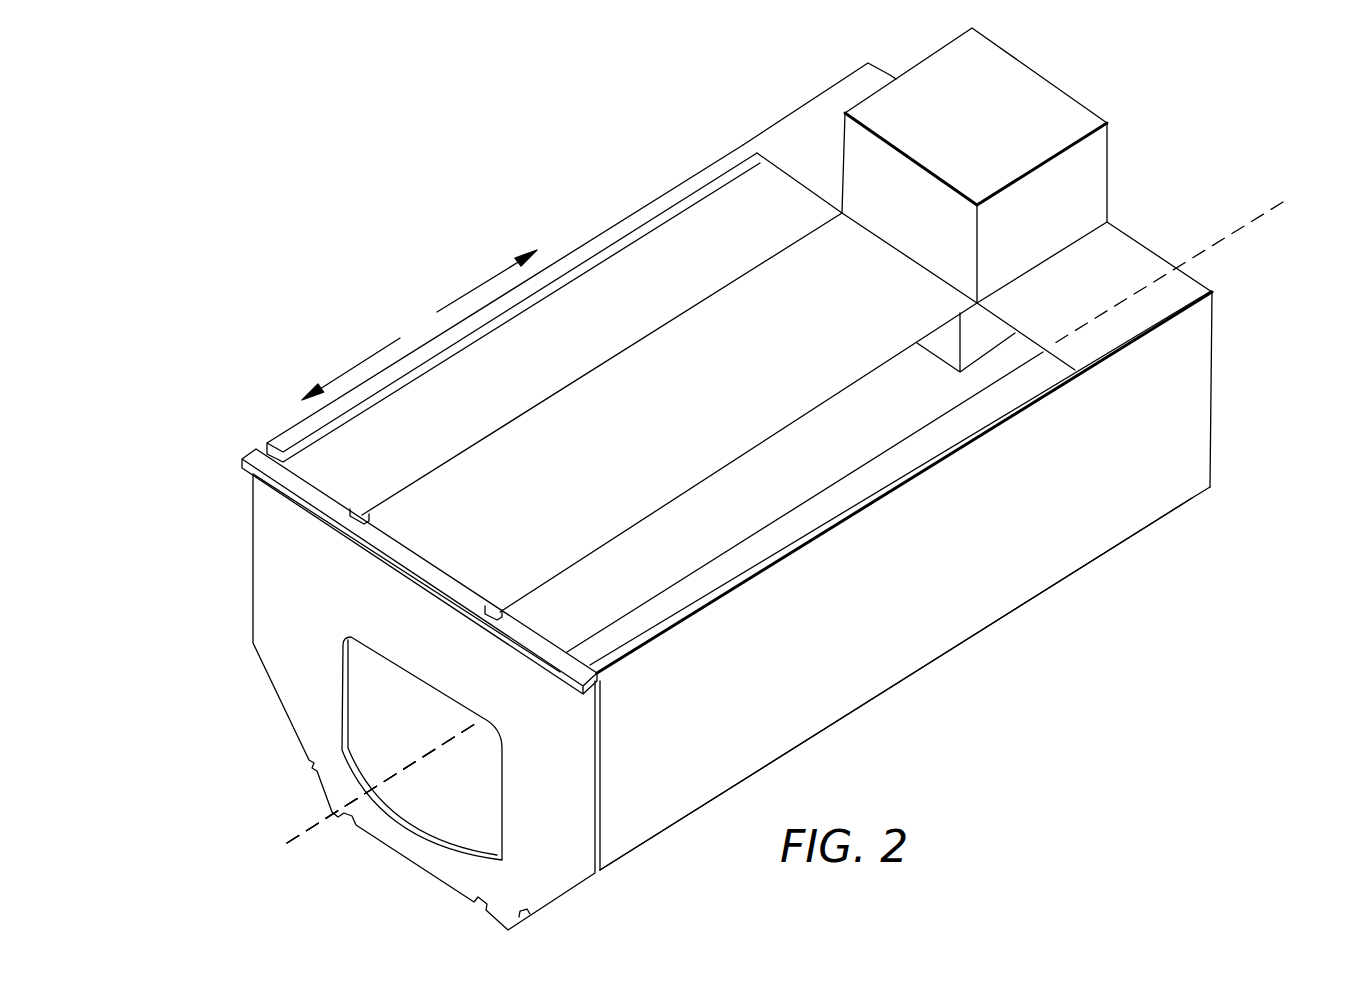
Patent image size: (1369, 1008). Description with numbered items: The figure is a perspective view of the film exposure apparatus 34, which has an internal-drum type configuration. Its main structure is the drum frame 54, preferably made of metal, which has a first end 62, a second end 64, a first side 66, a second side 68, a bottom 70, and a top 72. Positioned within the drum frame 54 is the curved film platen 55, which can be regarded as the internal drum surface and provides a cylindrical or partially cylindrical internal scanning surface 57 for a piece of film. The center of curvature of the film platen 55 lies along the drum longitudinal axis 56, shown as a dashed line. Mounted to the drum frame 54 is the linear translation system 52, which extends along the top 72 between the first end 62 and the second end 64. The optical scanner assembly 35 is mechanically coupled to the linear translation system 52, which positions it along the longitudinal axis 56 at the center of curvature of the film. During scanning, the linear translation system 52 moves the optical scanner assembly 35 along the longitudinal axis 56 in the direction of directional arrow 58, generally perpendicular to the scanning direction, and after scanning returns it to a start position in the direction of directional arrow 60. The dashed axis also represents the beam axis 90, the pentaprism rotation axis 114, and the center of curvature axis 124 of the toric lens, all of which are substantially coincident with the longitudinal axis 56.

The film exposure apparatus 34 is at (488, 176).
The optical scanner assembly 35 is at (984, 330).
The linear translation system 52 is at (1067, 91).
The drum frame 54 is at (1090, 566).
The curved film platen 55 is at (770, 498).
The longitudinal axis 56 is at (1252, 218).
The internal scanning surface 57 is at (707, 207).
The directional arrow 58 is at (340, 373).
The directional arrow 60 is at (457, 299).
The first end 62 is at (262, 562).
The second end 64 is at (1212, 420).
The first side 66 is at (638, 208).
The second side 68 is at (970, 623).
The bottom 70 is at (447, 892).
The top 72 is at (776, 133).
The beam axis 90 is at (310, 827).
The rotation axis 114 is at (382, 782).
The center of curvature axis 124 is at (382, 782).